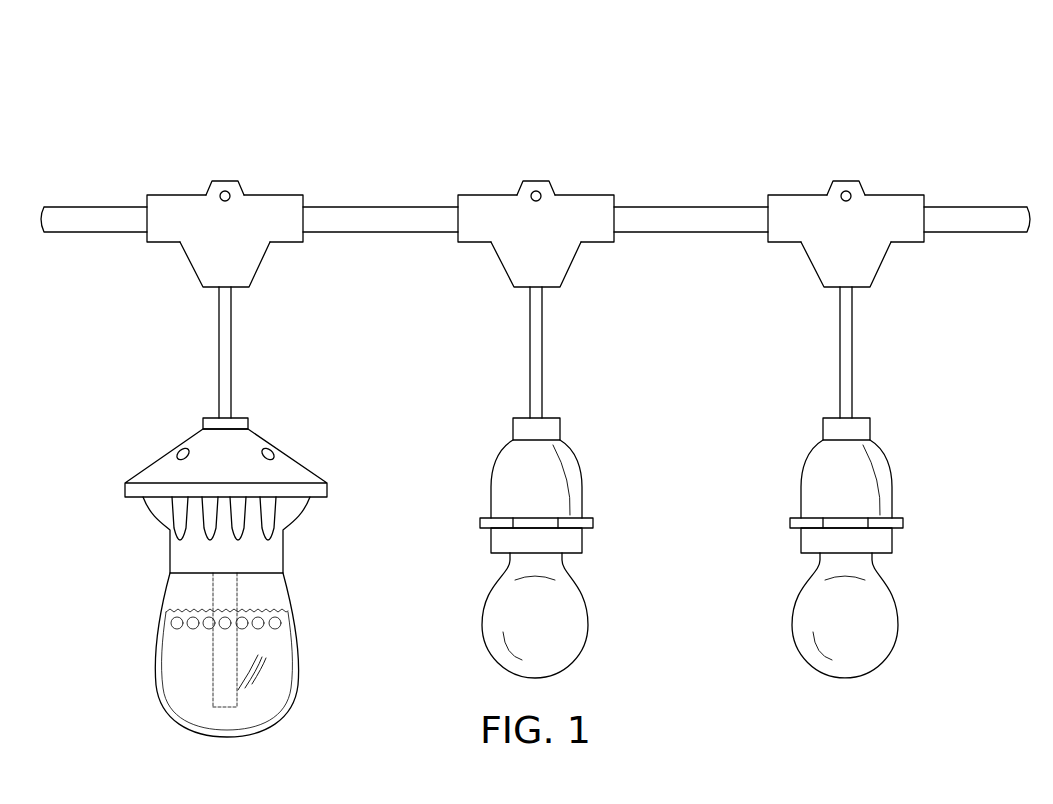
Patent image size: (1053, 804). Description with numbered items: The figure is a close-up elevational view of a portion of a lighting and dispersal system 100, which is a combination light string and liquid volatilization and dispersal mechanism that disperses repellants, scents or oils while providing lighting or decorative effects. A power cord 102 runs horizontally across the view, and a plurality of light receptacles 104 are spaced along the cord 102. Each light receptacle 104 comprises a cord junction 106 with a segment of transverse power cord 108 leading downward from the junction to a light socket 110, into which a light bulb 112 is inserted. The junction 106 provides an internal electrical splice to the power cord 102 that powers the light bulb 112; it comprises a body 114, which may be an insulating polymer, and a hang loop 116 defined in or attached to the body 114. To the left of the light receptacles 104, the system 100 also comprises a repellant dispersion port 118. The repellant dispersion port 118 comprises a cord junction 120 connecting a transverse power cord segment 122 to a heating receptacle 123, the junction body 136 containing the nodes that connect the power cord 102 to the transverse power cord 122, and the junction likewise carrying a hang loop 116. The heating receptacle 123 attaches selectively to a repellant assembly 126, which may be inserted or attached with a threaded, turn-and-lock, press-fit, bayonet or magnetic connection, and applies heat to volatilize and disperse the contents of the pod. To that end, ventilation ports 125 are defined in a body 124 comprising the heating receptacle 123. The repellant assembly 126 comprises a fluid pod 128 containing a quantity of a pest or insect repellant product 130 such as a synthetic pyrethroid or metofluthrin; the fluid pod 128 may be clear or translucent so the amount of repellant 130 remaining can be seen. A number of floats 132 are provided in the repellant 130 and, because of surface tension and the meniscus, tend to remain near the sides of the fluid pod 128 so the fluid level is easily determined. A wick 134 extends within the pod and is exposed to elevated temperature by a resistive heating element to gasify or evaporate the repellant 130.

The lighting and dispersal system 100 is at (684, 86).
The power cord 102 is at (693, 207).
The light receptacle 104 is at (701, 193).
The cord junction 106 is at (588, 189).
The transverse power cord 108 is at (545, 353).
The light socket 110 is at (584, 478).
The light bulb 112 is at (585, 620).
The body 114 is at (572, 262).
The hang loop 116 is at (222, 179).
The repellant dispersion port 118 is at (507, 199).
The cord junction 120 is at (279, 190).
The transverse power cord segment 122 is at (234, 353).
The heating receptacle 123 is at (214, 490).
The body 124 is at (288, 467).
The ventilation ports 125 is at (177, 542).
The repellant assembly 126 is at (219, 684).
The fluid pod 128 is at (278, 720).
The repellant product 130 is at (280, 664).
The floats 132 is at (163, 643).
The wick 134 is at (226, 708).
The junction body 136 is at (260, 262).